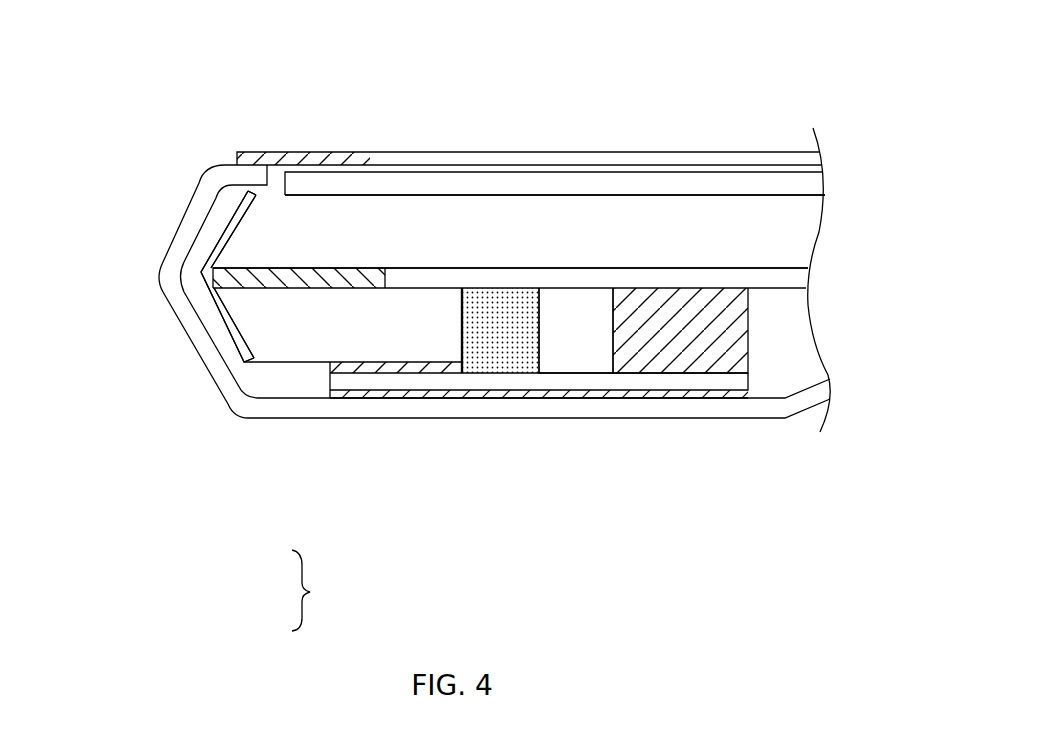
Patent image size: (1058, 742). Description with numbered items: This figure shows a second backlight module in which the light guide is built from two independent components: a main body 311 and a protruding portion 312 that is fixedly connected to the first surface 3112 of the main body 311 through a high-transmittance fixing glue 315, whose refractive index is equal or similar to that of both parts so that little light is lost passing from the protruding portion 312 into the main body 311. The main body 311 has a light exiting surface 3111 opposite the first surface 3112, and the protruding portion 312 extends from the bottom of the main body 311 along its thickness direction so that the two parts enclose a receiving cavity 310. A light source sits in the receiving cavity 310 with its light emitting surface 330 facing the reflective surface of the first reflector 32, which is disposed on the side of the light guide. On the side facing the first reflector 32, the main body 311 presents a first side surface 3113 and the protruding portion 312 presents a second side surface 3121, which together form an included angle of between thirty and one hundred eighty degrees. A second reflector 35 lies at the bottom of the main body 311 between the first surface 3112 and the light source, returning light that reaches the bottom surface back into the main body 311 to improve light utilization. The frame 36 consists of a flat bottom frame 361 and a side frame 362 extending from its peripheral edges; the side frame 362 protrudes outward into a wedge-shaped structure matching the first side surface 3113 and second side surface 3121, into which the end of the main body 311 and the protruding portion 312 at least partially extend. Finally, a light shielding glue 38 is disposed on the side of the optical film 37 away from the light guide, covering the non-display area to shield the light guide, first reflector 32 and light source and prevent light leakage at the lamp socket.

The light shielding glue 38 is at (257, 150).
The side frame 362 is at (190, 240).
The bottom frame 361 is at (543, 402).
The frame 36 is at (318, 590).
The first side surface 3113 is at (240, 226).
The high-transmittance fixing glue 315 is at (327, 277).
The main body 311 is at (456, 235).
The first surface 3112 is at (512, 270).
The optical film 37 is at (619, 183).
The light exiting surface 3111 is at (708, 196).
The first reflector 32 is at (232, 330).
The second side surface 3121 is at (245, 344).
The protruding portion 312 is at (378, 340).
The light emitting surface 330 is at (462, 340).
The receiving cavity 310 is at (572, 353).
The second reflector 35 is at (697, 277).